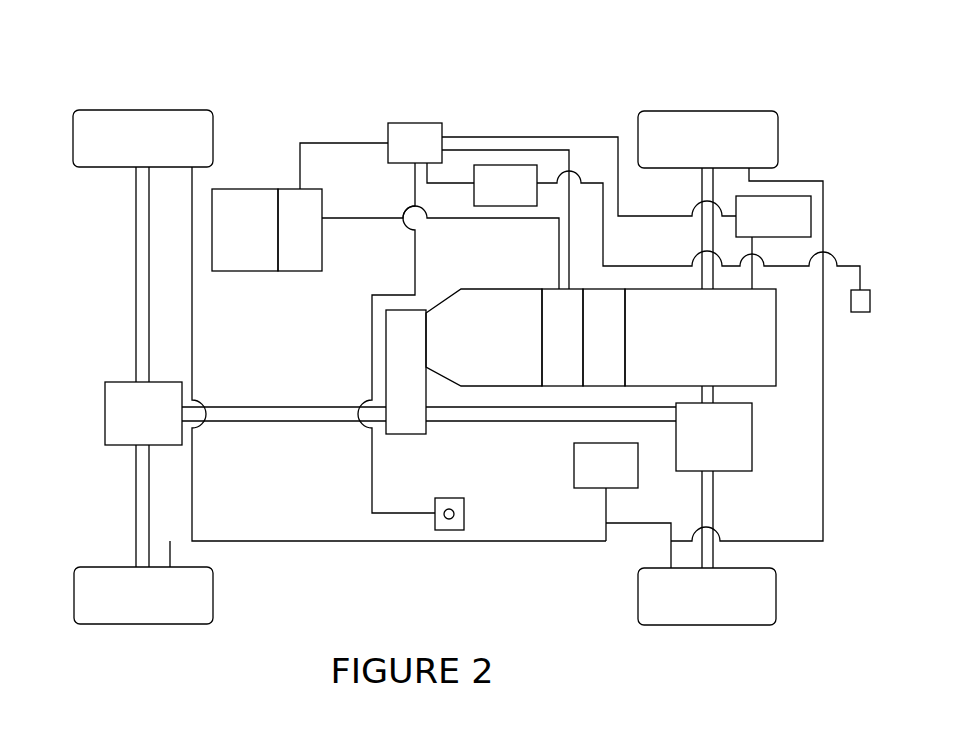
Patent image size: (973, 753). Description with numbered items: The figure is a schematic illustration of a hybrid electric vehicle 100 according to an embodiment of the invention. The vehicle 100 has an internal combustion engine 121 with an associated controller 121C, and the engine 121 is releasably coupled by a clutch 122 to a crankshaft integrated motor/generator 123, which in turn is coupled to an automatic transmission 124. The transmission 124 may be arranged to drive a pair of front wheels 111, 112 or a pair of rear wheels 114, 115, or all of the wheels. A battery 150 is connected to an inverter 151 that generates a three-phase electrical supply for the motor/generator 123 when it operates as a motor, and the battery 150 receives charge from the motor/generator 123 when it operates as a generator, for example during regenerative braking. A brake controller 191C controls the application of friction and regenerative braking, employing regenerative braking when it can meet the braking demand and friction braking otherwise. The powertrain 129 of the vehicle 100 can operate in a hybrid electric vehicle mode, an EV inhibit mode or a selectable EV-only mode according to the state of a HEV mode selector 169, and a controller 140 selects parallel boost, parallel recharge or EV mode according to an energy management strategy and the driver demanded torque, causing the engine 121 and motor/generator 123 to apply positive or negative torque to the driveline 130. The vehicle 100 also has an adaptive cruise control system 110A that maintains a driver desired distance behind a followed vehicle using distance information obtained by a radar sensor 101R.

The hybrid electric vehicle 100 is at (768, 80).
The front wheel 111 is at (694, 150).
The front wheel 112 is at (693, 607).
The rear wheel 114 is at (129, 149).
The rear wheel 115 is at (129, 606).
The internal combustion engine 121 is at (686, 347).
The clutch 122 is at (590, 347).
The crankshaft integrated motor/generator 123 is at (548, 347).
The automatic transmission 124 is at (474, 347).
The engine controller 121C is at (755, 225).
The controller 140 is at (401, 152).
The battery 150 is at (231, 241).
The inverter 151 is at (286, 241).
The adaptive cruise control system 110A is at (487, 194).
The brake controller 191C is at (622, 505).
The HEV mode selector 169 is at (449, 519).
The radar sensor 101R is at (866, 300).
The powertrain 129 is at (863, 344).
The driveline 130 is at (282, 457).